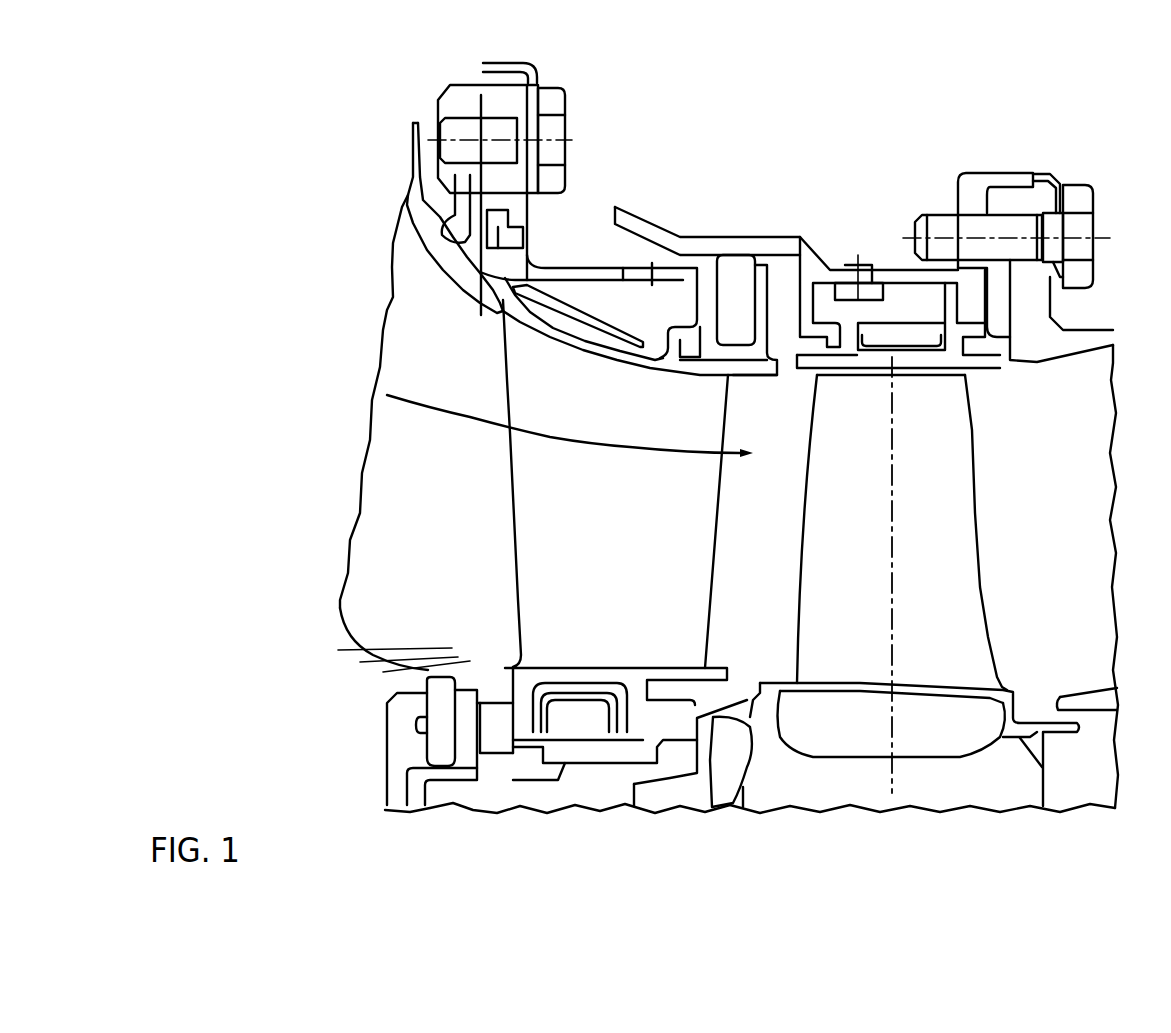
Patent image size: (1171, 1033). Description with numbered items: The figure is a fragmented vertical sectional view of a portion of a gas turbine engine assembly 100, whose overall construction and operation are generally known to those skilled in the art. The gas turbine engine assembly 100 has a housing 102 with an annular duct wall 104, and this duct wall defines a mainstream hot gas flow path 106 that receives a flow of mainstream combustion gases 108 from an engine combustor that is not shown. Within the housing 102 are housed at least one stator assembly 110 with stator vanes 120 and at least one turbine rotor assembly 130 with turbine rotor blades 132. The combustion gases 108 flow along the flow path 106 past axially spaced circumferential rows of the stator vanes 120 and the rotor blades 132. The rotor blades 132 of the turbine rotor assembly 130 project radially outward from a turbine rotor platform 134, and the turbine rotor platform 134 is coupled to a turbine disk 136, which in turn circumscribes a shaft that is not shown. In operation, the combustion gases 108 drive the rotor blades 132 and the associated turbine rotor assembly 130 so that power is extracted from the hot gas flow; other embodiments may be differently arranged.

The gas turbine engine assembly 100 is at (1075, 112).
The housing 102 is at (433, 282).
The annular duct wall 104 is at (727, 373).
The mainstream hot gas flow path 106 is at (382, 500).
The mainstream combustion gases 108 is at (590, 443).
The stator assembly 110 is at (505, 599).
The stator vanes 120 is at (700, 610).
The turbine rotor assembly 130 is at (995, 517).
The turbine rotor blades 132 is at (975, 435).
The turbine rotor platform 134 is at (1003, 690).
The turbine disk 136 is at (803, 797).